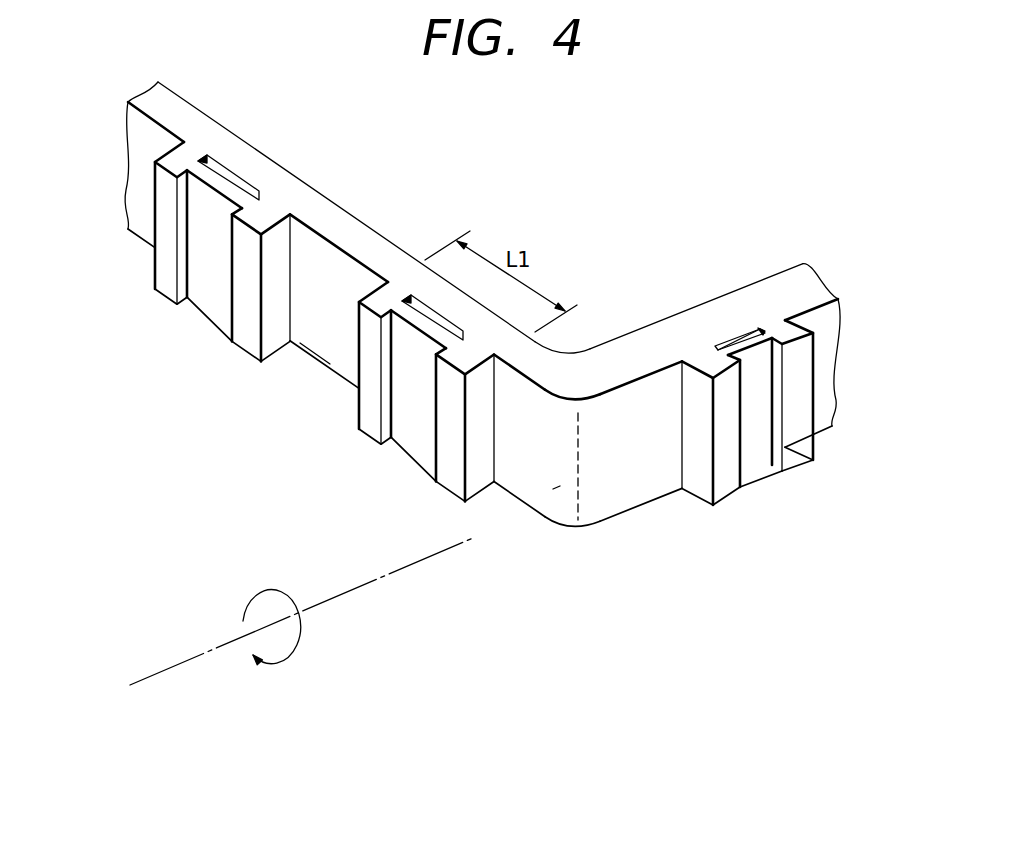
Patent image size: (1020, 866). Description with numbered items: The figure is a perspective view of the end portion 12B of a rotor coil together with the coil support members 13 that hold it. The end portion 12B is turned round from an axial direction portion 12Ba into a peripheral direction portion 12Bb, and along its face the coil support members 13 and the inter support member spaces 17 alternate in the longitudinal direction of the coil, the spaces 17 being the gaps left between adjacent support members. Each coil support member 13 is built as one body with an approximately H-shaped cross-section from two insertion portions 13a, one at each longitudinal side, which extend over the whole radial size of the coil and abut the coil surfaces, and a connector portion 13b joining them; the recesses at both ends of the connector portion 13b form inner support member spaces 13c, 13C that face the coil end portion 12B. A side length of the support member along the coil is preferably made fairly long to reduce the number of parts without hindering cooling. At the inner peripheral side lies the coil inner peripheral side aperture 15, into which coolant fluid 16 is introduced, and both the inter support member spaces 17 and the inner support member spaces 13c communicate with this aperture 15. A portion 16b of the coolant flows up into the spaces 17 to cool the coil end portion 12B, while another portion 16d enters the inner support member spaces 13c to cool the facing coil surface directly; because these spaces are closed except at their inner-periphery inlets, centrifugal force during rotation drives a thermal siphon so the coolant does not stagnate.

The end portion of the rotor coil 12B is at (482, 278).
The axial direction portion 12Ba is at (695, 322).
The peripheral direction portion 12Bb is at (302, 197).
The coil support member 13 is at (485, 327).
The insertion portion 13a is at (168, 283).
The connector portion 13b is at (207, 230).
The inner support member space 13c is at (245, 182).
The inner support member space 13C is at (735, 330).
The coil inner peripheral side aperture 15 is at (248, 458).
The coolant fluid 16 is at (202, 447).
The portion of the coolant fluid 16b is at (316, 322).
The portion of the coolant fluid 16d is at (210, 268).
The inter support member space 17 is at (300, 342).